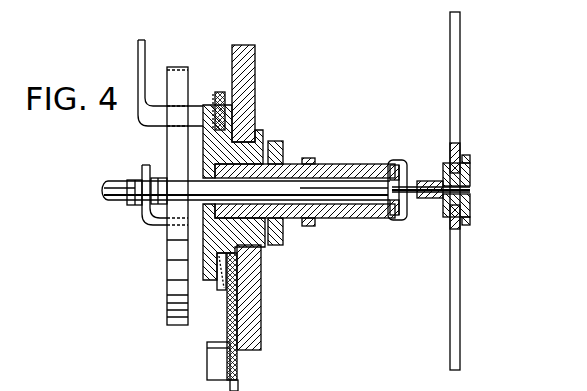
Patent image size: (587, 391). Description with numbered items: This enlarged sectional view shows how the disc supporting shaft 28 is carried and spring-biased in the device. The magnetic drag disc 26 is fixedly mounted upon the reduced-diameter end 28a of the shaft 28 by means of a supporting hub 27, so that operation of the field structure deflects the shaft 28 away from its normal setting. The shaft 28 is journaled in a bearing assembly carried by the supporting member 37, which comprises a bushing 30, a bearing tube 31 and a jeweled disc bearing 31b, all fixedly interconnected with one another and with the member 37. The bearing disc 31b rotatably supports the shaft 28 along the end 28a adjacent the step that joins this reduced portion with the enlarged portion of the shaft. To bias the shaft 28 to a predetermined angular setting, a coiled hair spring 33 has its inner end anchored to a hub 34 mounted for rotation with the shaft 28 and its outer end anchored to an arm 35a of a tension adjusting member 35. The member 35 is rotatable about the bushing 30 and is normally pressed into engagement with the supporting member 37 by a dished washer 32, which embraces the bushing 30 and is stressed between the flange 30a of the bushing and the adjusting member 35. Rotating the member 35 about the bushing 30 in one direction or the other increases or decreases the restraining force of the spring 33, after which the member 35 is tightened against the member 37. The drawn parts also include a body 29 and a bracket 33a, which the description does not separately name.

The drag disc 26 is at (458, 278).
The supporting hub 27 is at (432, 182).
The shaft 28 is at (113, 192).
The end of the shaft 28a is at (408, 203).
The housing body 29 is at (263, 141).
The bushing 30 is at (258, 244).
The flange 30a is at (206, 282).
The bearing tube 31 is at (343, 164).
The jeweled disc bearing 31b is at (393, 160).
The dished washer 32 is at (221, 92).
The coiled hair spring 33 is at (172, 327).
The bracket 33a is at (160, 228).
The hub 34 is at (134, 207).
The tension adjusting member 35 is at (236, 364).
The arm 35a is at (143, 56).
The supporting member 37 is at (252, 77).